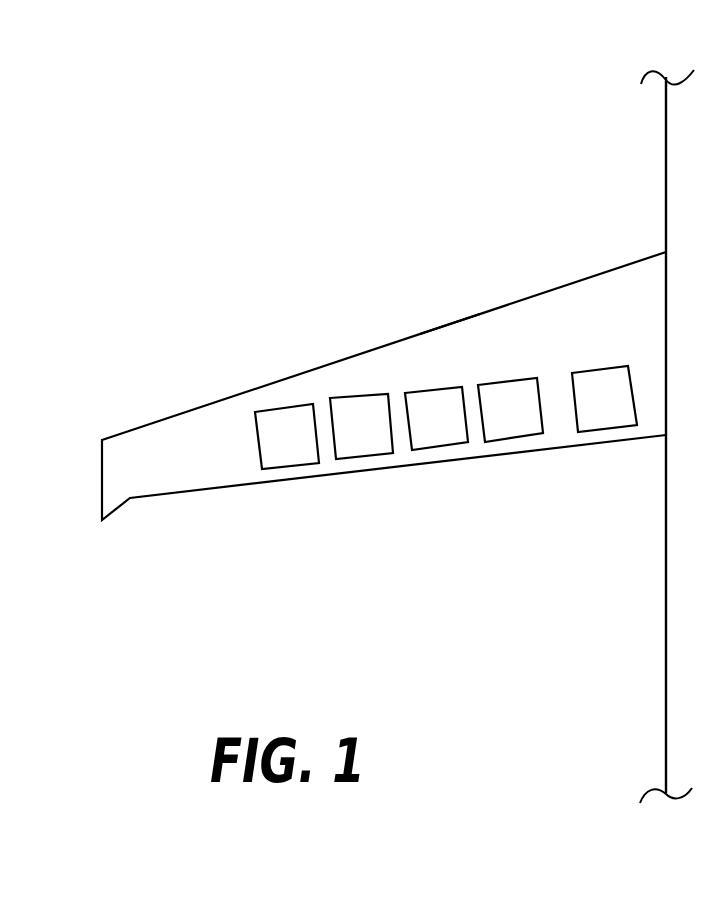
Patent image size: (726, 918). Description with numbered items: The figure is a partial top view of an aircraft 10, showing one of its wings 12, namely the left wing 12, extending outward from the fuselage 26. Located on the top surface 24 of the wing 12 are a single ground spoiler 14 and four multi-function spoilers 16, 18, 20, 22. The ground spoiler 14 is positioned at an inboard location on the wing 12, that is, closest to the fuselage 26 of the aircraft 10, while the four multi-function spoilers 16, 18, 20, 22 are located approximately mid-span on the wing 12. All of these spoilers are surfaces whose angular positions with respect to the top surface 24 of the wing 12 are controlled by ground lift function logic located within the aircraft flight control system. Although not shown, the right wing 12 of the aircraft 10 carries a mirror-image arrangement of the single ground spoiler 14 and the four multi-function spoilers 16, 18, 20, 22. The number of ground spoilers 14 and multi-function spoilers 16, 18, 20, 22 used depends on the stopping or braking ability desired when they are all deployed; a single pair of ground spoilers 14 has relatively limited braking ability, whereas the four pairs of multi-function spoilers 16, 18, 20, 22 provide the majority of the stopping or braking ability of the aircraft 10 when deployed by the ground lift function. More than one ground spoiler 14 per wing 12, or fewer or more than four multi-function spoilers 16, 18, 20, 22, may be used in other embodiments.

The aircraft 10 is at (590, 177).
The wing 12 is at (199, 408).
The ground spoiler 14 is at (603, 413).
The multi-function spoiler 16 is at (512, 428).
The multi-function spoiler 18 is at (433, 437).
The multi-function spoiler 20 is at (357, 447).
The multi-function spoiler 22 is at (282, 457).
The top surface 24 is at (458, 350).
The fuselage 26 is at (666, 572).